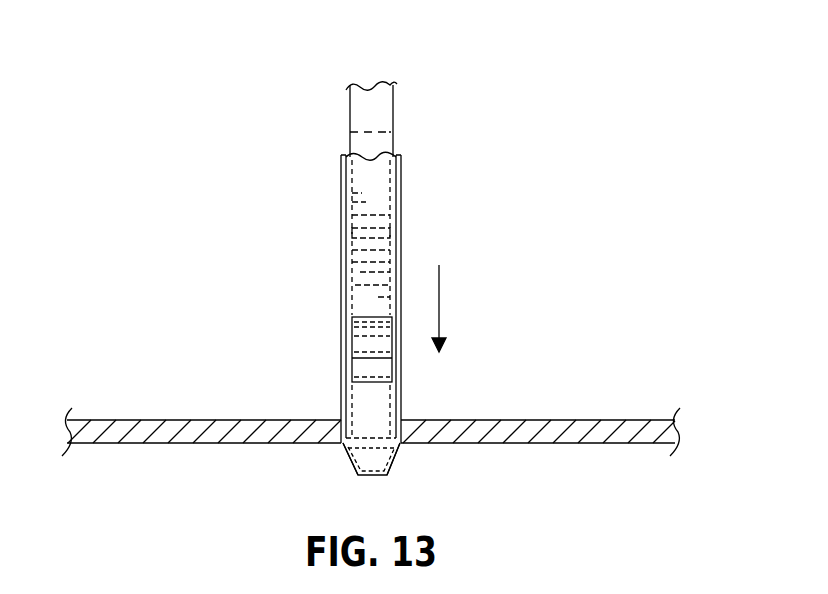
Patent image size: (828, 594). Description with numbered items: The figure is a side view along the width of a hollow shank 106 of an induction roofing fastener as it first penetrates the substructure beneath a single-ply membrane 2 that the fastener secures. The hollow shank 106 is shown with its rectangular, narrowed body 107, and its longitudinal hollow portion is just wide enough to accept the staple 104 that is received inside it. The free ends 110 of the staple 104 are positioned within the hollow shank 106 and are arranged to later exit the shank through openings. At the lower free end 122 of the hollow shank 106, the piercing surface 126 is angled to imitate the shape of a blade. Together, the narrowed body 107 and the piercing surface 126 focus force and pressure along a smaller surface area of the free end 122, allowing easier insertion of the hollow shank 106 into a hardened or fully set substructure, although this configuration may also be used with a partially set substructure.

The staple 104 is at (393, 119).
The hollow shank 106 is at (341, 230).
The body 107 is at (401, 213).
The free ends 110 is at (367, 368).
The single-ply membrane 2 is at (553, 420).
The free end 122 is at (345, 460).
The piercing surface 126 is at (393, 455).